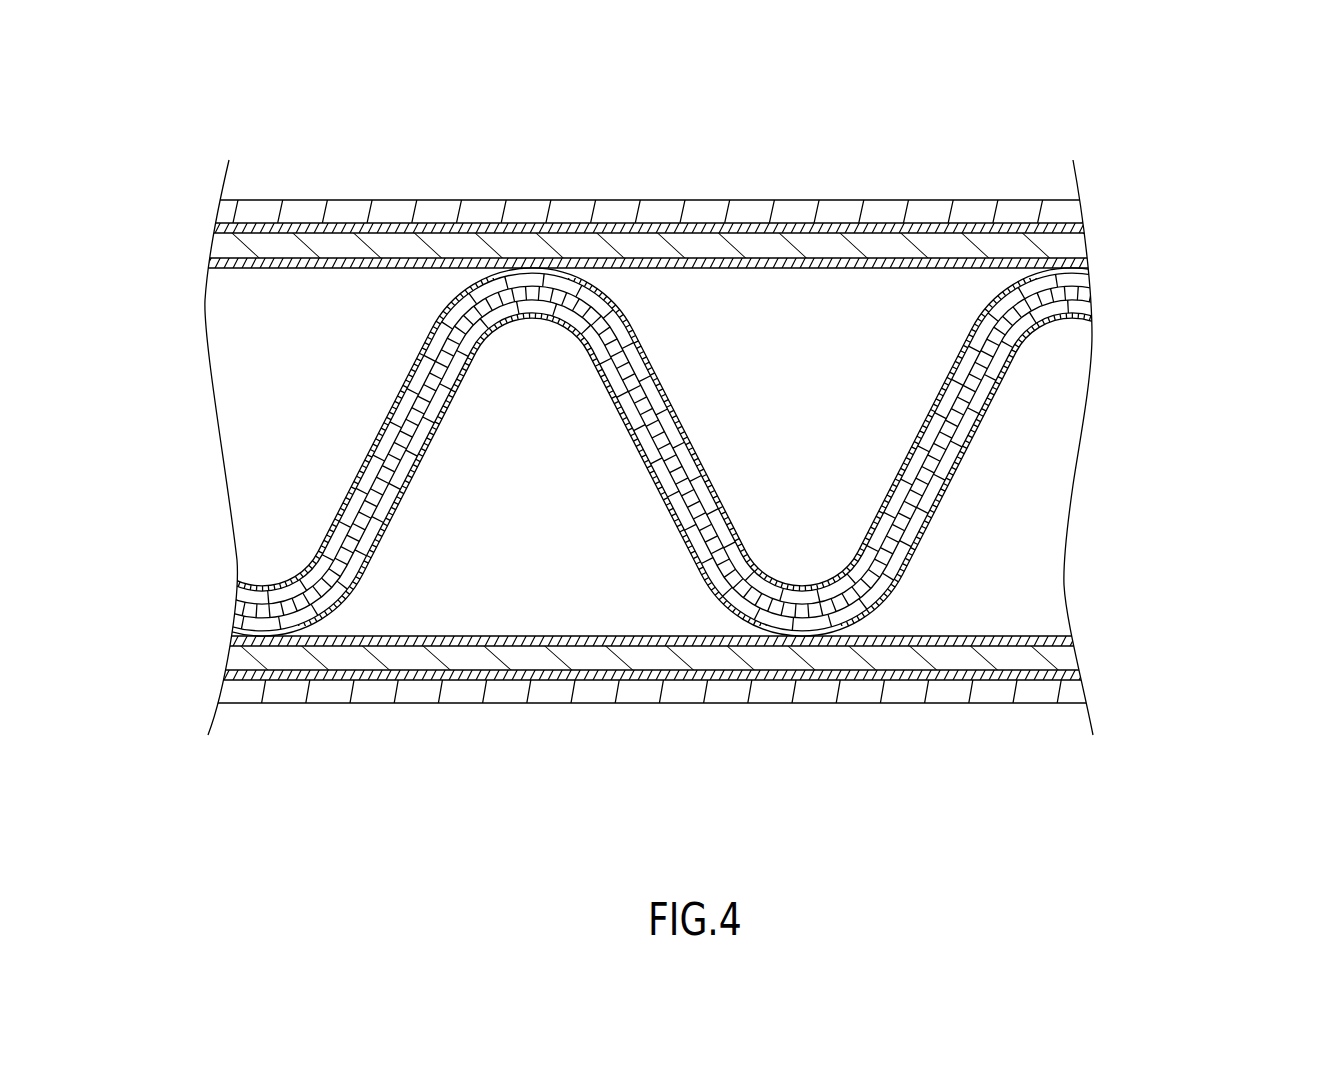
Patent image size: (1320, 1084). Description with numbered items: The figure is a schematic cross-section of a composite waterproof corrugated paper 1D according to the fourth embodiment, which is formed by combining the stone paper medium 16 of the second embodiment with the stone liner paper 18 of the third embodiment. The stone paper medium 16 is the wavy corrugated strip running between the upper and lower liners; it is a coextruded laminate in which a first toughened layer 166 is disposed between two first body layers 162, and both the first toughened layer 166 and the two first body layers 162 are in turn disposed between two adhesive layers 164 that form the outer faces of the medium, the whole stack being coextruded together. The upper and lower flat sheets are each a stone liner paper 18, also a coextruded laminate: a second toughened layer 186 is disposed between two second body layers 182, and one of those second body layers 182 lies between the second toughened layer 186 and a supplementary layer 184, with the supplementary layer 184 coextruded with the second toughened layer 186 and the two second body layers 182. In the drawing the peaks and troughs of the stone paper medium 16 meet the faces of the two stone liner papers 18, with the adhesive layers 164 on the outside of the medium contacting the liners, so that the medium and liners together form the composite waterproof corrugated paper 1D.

The composite waterproof corrugated paper 1D is at (197, 197).
The stone paper medium 16 is at (1233, 323).
The first body layer 162 is at (1003, 380).
The adhesive layer 164 is at (1007, 333).
The first toughened layer 166 is at (980, 427).
The stone liner paper 18 is at (503, 113).
The second body layer 182 is at (390, 253).
The supplementary layer 184 is at (337, 257).
The second toughened layer 186 is at (450, 223).